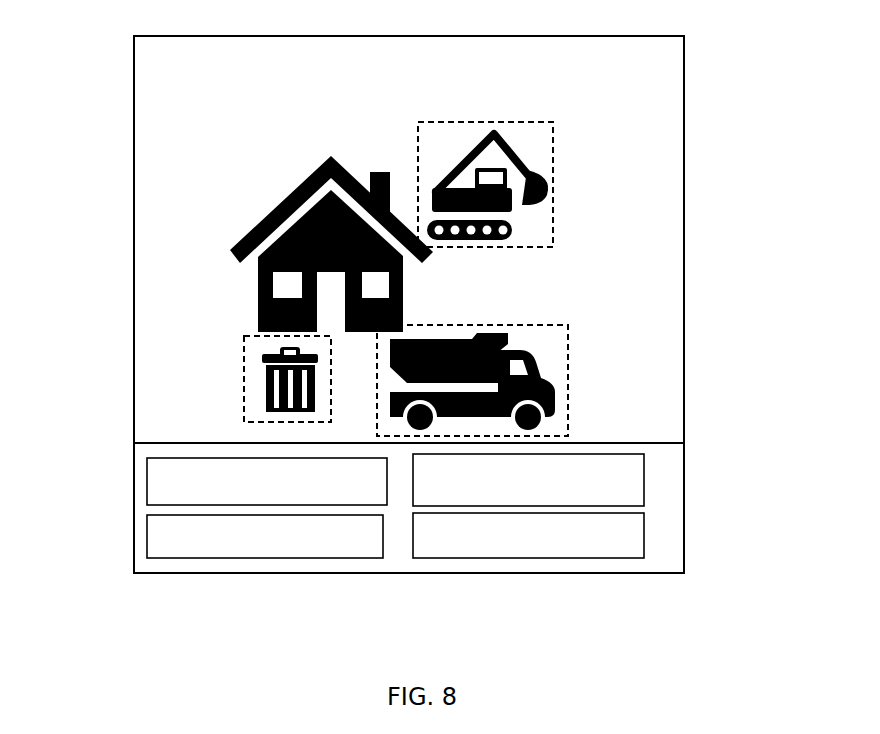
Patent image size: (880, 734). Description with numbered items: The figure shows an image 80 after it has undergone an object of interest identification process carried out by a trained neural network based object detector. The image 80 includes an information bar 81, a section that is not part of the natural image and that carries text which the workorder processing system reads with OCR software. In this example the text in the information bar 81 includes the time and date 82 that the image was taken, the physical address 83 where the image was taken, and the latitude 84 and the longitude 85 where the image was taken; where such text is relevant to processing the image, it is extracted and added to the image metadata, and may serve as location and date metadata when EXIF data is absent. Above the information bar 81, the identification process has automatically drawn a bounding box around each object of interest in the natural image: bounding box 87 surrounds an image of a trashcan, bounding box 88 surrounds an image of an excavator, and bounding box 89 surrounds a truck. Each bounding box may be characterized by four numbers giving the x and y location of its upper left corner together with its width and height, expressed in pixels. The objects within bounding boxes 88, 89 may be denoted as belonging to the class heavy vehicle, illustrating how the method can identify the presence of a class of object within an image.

The image 80 is at (134, 93).
The information bar 81 is at (401, 540).
The time and date 82 is at (147, 482).
The physical address 83 is at (644, 480).
The latitude 84 is at (147, 535).
The longitude 85 is at (644, 537).
The bounding box 87 is at (245, 379).
The bounding box 88 is at (590, 184).
The bounding box 89 is at (568, 400).